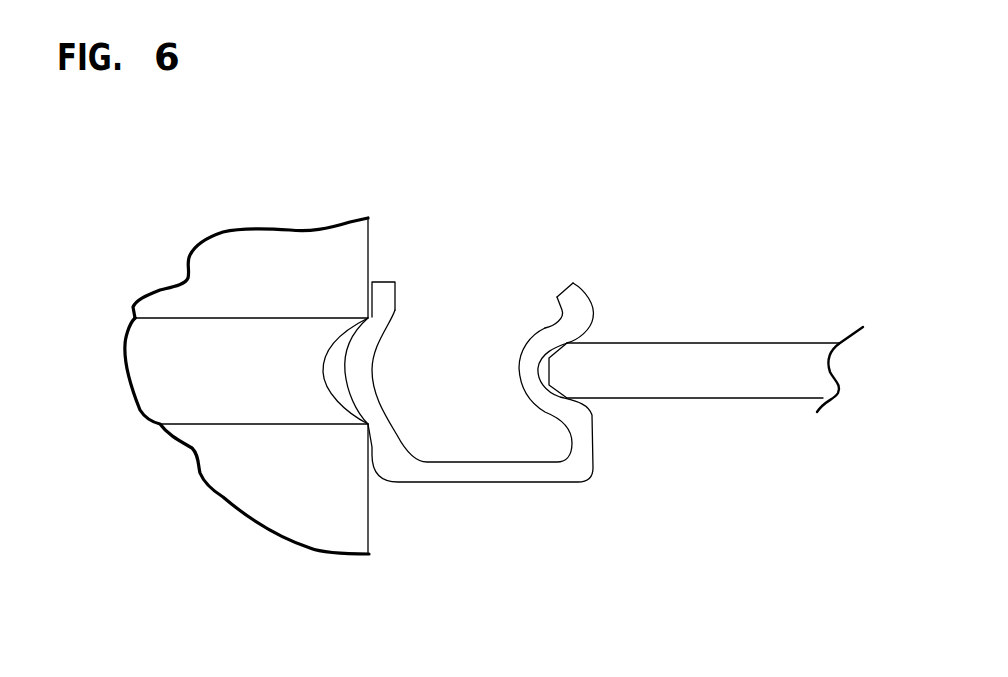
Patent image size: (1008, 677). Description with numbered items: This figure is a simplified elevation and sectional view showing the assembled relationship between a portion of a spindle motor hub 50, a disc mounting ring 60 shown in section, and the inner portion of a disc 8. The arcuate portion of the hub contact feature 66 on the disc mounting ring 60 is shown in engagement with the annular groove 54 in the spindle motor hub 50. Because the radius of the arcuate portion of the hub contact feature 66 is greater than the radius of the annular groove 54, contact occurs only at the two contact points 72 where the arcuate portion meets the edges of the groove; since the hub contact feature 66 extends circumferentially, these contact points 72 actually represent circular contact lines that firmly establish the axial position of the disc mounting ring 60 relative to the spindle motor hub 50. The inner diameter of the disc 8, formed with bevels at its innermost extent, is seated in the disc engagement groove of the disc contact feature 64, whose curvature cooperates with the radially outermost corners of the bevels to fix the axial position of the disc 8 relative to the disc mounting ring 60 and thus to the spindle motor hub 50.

The disc 8 is at (723, 365).
The spindle motor hub 50 is at (235, 262).
The annular groove 54 is at (197, 383).
The disc mounting ring 60 is at (613, 520).
The disc contact feature 64 is at (570, 295).
The hub contact feature 66 is at (385, 282).
The contact points 72 is at (368, 318).